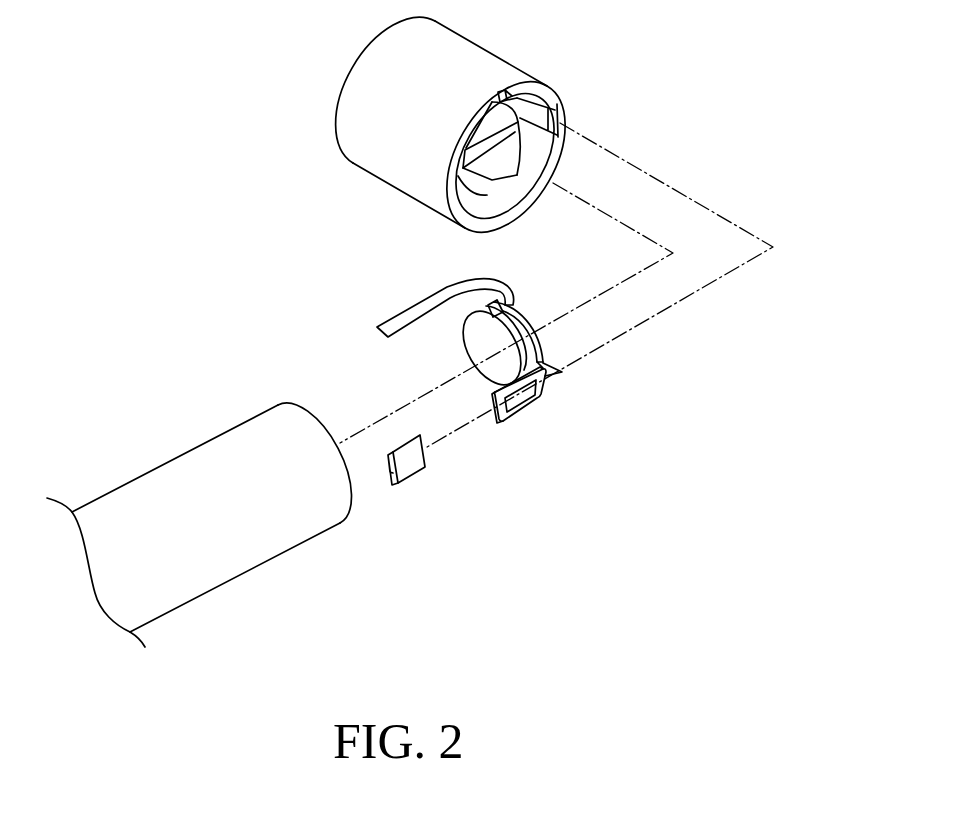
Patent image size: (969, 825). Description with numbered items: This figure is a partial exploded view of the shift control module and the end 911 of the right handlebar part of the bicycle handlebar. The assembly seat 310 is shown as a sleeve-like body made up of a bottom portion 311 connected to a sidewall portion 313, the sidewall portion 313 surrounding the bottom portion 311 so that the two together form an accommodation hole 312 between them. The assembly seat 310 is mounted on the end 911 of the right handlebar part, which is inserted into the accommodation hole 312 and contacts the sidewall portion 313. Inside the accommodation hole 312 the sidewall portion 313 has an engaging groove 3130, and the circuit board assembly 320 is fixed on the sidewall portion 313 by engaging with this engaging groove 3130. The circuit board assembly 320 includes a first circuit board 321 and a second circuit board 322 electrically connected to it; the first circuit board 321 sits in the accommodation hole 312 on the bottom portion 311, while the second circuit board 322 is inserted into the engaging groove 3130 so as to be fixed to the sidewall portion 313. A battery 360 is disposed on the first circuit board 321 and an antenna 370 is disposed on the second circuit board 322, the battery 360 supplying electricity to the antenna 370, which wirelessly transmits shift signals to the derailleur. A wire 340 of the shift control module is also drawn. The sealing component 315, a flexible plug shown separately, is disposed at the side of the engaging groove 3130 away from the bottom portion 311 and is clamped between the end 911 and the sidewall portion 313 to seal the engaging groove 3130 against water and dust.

The assembly seat 310 is at (192, 140).
The bottom portion 311 is at (342, 86).
The accommodation hole 312 is at (540, 152).
The sidewall portion 313 is at (417, 152).
The engaging groove 3130 is at (572, 120).
The sealing component 315 is at (410, 452).
The circuit board assembly 320 is at (673, 350).
The first circuit board 321 is at (538, 352).
The second circuit board 322 is at (550, 382).
The wire 340 is at (443, 297).
The battery 360 is at (478, 342).
The antenna 370 is at (514, 403).
The end of the right handlebar part 911 is at (142, 490).